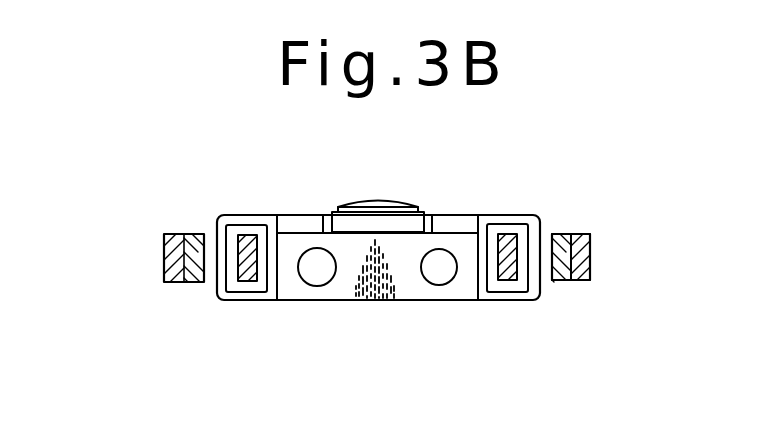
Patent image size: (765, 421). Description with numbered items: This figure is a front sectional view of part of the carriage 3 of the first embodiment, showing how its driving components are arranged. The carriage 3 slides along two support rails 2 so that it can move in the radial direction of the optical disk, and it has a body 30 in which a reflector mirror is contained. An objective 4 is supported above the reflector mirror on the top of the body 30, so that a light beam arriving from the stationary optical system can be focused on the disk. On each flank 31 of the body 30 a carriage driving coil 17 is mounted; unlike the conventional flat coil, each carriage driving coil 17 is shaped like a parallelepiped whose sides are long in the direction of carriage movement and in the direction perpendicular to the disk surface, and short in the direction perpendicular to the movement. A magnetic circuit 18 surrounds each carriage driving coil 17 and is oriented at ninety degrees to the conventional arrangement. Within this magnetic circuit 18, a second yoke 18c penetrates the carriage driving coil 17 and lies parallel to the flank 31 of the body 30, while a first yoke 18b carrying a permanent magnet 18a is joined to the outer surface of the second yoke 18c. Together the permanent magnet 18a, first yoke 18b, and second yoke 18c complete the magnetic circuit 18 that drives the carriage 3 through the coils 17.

The support rails 2 is at (317, 275).
The carriage 3 is at (299, 196).
The objective 4 is at (377, 201).
The carriage driving coils 17 is at (505, 213).
The magnetic circuit 18 is at (579, 319).
The permanent magnet 18a is at (562, 268).
The first yoke 18b is at (621, 292).
The second yoke 18c is at (505, 268).
The body 30 is at (375, 300).
The flanks 31 is at (461, 273).